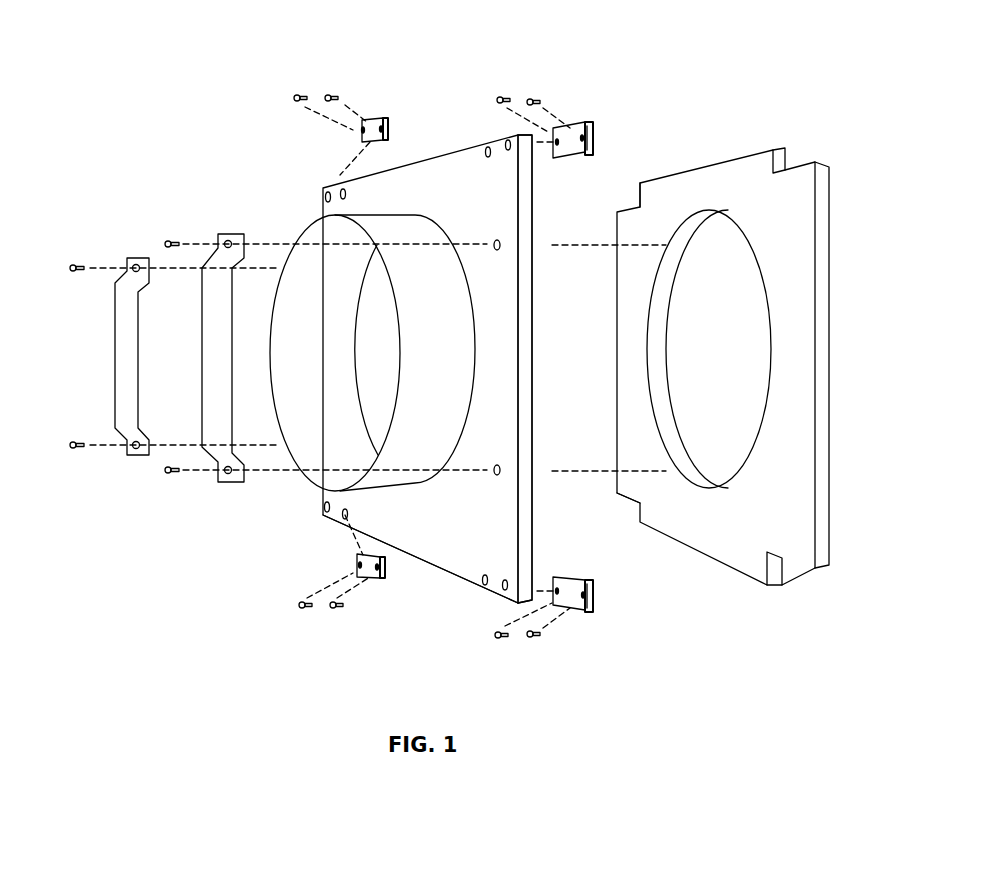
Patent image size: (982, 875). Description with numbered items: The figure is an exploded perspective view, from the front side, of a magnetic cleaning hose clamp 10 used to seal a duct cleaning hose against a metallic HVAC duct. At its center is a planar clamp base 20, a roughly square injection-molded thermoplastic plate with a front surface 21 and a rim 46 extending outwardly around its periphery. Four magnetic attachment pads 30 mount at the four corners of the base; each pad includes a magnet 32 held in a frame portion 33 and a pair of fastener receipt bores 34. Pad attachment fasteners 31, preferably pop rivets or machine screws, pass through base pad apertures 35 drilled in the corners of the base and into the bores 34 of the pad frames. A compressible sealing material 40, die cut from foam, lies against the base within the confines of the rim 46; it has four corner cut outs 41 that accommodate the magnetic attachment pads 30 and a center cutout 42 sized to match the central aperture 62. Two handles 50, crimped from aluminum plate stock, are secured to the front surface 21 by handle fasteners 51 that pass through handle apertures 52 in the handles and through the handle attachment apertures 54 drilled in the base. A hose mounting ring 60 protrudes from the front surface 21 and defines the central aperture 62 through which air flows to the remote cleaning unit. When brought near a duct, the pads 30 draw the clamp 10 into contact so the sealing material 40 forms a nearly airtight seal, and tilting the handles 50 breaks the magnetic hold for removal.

The magnetic cleaning hose clamp 10 is at (612, 50).
The planar clamp base 20 is at (447, 175).
The front surface 21 is at (463, 560).
The magnetic attachment pads 30 is at (374, 120).
The pad attachment fasteners 31 is at (296, 95).
The magnet 32 is at (385, 133).
The frame portion 33 is at (386, 118).
The fastener receipt bores 34 is at (580, 155).
The base pad apertures 35 is at (332, 190).
The compressible sealing material 40 is at (788, 218).
The corner cut outs 41 is at (799, 158).
The center cutout 42 is at (715, 478).
The rim 46 is at (527, 216).
The handles 50 is at (115, 360).
The handle fasteners 51 is at (72, 264).
The handle apertures 52 is at (135, 263).
The handle attachment apertures 54 is at (501, 246).
The hose mounting ring 60 is at (320, 235).
The central aperture 62 is at (380, 395).